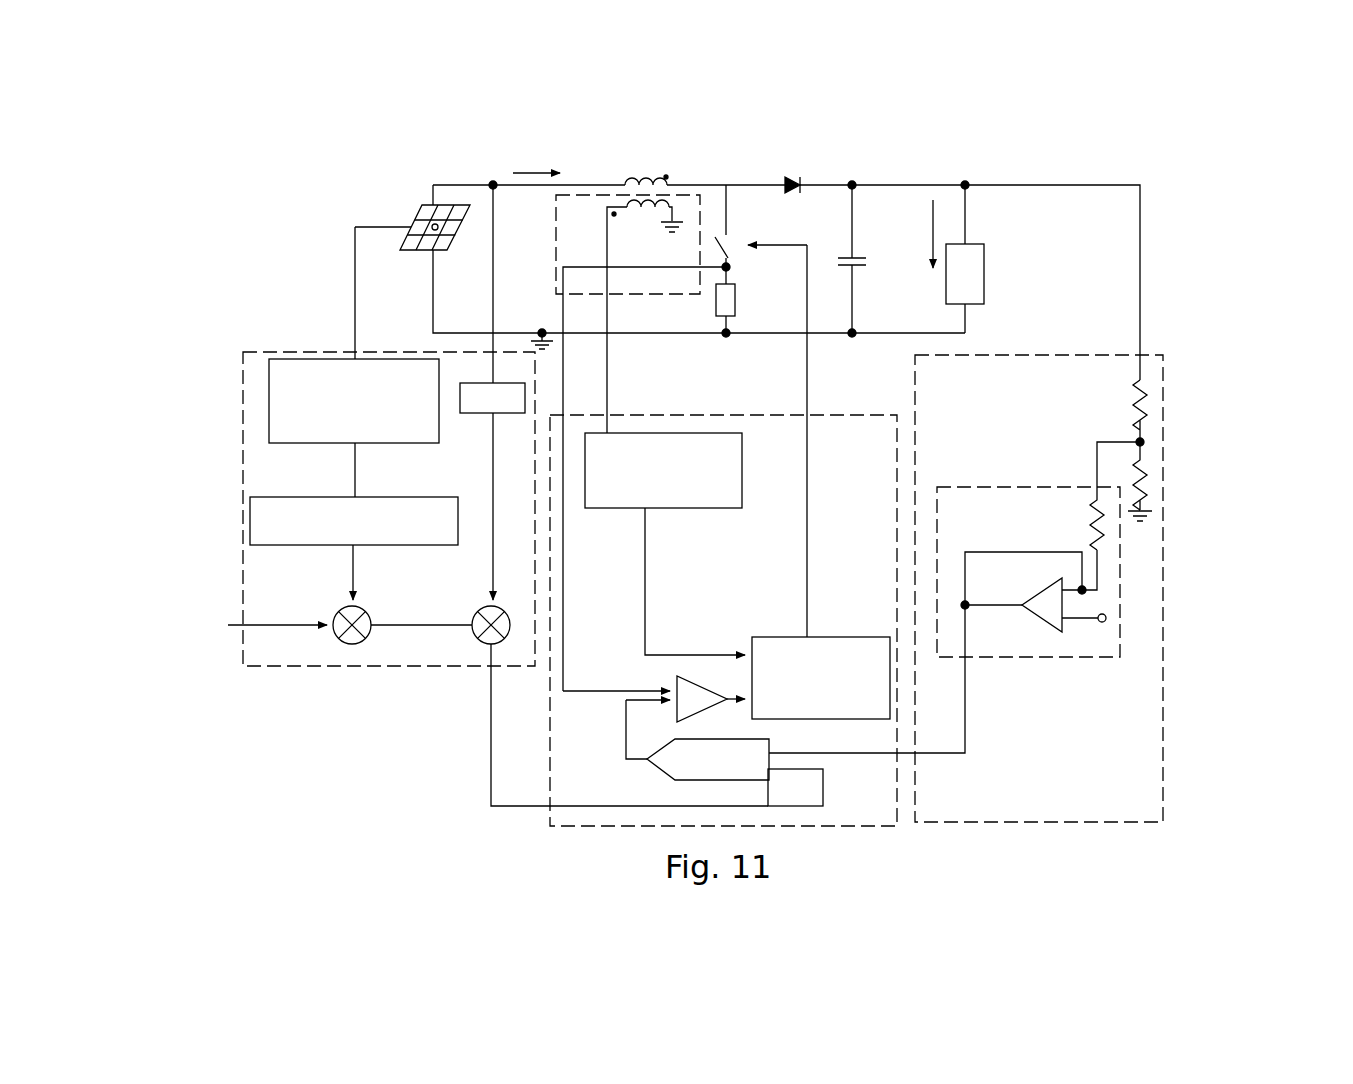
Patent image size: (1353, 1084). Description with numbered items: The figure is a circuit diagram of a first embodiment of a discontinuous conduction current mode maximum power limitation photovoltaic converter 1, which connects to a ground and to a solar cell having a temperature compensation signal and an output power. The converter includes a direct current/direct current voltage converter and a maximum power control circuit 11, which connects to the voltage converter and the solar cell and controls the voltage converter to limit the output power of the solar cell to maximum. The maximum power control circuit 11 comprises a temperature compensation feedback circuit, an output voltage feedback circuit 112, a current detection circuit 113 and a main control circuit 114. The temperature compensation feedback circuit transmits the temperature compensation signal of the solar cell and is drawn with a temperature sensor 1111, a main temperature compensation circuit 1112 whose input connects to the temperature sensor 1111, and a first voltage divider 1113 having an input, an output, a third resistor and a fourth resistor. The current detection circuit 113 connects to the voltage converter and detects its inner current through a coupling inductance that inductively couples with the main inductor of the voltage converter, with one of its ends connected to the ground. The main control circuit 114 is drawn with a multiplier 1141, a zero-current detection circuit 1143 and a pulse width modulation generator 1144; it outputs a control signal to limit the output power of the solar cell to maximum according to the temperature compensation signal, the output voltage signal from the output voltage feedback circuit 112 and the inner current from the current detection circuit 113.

The discontinuous conduction current mode maximum power limitation photovoltaic conv 1 is at (1160, 160).
The maximum power control circuit 11 is at (438, 495).
The temperature sensor 1111 is at (313, 377).
The main temperature compensation circuit 1112 is at (258, 543).
The first voltage divider 1113 is at (470, 405).
The current detection circuit 113 is at (613, 287).
The main control circuit 114 is at (699, 634).
The multiplier 1141 is at (748, 773).
The zero-current detection circuit 1143 is at (705, 498).
The pulse width modulation generator 1144 is at (870, 638).
The output voltage feedback circuit 112 is at (1118, 708).